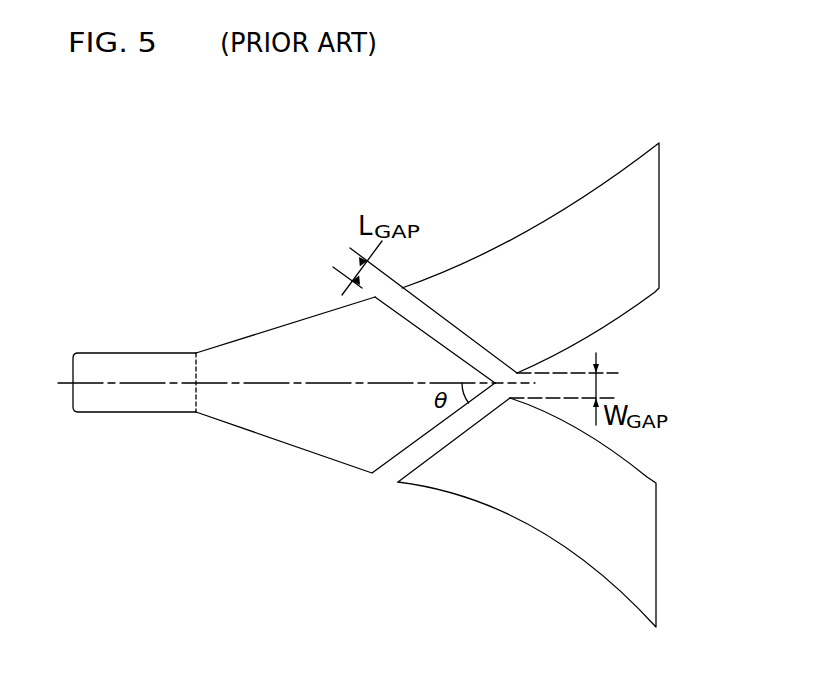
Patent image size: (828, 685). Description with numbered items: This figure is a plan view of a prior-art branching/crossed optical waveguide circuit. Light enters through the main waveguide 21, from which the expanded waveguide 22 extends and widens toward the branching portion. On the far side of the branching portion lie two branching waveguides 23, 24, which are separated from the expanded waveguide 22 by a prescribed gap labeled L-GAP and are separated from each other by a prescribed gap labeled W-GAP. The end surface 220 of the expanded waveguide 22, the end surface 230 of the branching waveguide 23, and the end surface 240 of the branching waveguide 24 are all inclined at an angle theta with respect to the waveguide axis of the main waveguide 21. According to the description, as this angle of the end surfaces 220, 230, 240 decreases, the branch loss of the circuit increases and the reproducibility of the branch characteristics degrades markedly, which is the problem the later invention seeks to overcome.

The main waveguide 21 is at (123, 407).
The expanded waveguide 22 is at (307, 340).
The branching waveguide 23 is at (540, 258).
The branching waveguide 24 is at (549, 512).
The end surface of expanded waveguide 220 is at (403, 317).
The end surface of branching waveguide 230 is at (424, 304).
The end surface of branching waveguide 240 is at (446, 448).